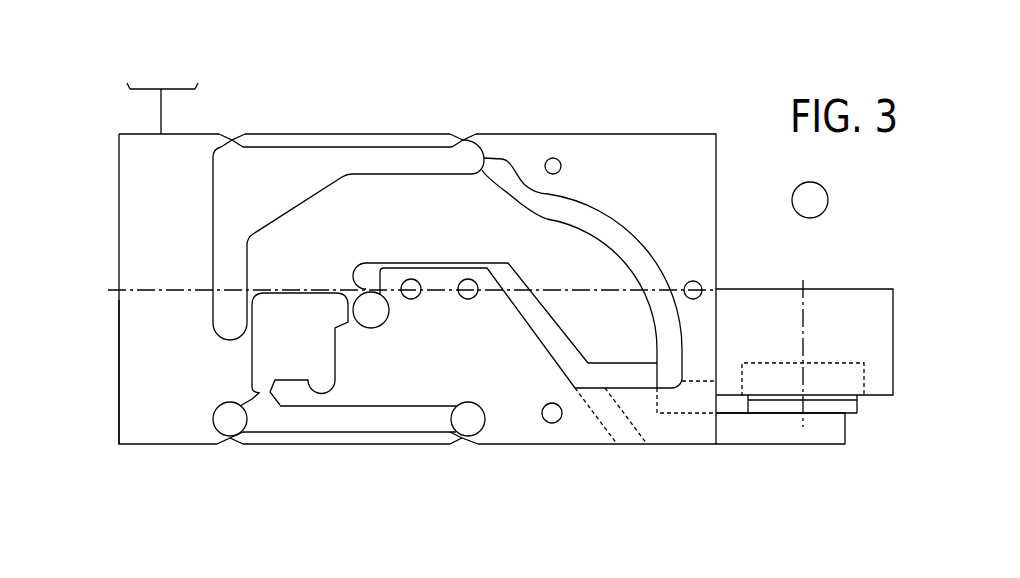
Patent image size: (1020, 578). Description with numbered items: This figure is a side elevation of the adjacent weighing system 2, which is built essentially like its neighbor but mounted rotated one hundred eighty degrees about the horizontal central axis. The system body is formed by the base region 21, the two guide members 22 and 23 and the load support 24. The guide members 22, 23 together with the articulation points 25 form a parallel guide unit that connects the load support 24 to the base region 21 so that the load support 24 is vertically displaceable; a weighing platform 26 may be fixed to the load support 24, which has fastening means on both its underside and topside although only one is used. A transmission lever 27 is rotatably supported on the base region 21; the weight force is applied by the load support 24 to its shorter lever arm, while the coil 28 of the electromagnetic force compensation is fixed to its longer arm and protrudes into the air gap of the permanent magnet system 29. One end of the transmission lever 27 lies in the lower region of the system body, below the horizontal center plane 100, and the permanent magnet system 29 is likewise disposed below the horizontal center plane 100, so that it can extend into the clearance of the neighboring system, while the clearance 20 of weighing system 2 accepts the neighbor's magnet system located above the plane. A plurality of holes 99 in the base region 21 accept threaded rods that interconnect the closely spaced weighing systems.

The weighing system 2 is at (272, 478).
The clearance 20 is at (810, 200).
The base region 21 is at (670, 157).
The guide member 22 is at (348, 134).
The guide member 23 is at (343, 440).
The load support 24 is at (158, 435).
The articulation points 25 is at (232, 136).
The weighing platform 26 is at (130, 91).
The transmission lever 27 is at (415, 193).
The coil 28 is at (860, 398).
The permanent magnet system 29 is at (878, 300).
The holes 99 is at (557, 158).
The horizontal center plane 100 is at (113, 292).